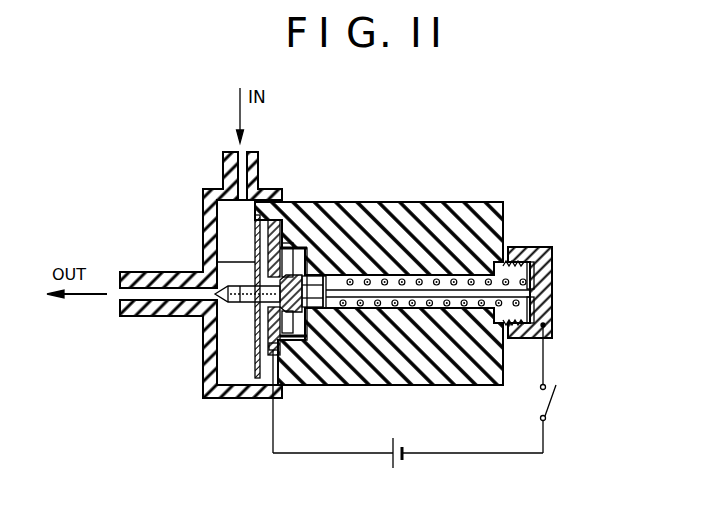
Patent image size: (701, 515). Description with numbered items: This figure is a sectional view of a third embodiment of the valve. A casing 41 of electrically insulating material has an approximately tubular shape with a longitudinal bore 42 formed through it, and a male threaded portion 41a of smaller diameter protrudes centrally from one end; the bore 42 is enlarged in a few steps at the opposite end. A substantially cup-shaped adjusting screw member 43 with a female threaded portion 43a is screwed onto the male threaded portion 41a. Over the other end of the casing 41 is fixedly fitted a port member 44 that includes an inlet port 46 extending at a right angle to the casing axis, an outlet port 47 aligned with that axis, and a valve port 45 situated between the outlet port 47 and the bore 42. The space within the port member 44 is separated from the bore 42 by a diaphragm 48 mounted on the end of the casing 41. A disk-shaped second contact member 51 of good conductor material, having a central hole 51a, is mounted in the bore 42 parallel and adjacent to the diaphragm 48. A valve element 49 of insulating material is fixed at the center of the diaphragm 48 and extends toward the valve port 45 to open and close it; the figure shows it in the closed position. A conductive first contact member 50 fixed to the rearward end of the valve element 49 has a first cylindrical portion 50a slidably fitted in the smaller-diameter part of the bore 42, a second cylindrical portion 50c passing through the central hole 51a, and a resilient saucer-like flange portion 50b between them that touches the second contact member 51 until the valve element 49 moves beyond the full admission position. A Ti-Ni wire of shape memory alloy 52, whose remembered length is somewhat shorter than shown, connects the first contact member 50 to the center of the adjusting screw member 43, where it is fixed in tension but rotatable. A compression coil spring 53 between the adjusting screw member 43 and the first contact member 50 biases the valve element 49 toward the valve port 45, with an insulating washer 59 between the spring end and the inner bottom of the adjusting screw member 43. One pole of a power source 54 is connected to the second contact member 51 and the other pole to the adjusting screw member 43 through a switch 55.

The casing 41 is at (399, 212).
The male threaded portion 41a is at (519, 340).
The longitudinal bore 42 is at (400, 322).
The adjusting screw member 43 is at (554, 287).
The female threaded portion 43a is at (536, 265).
The port member 44 is at (208, 190).
The valve port 45 is at (211, 318).
The inlet port 46 is at (242, 153).
The outlet port 47 is at (118, 294).
The diaphragm 48 is at (256, 240).
The valve element 49 is at (262, 343).
The first contact member 50 is at (318, 248).
The first cylindrical portion 50a is at (328, 346).
The flange portion 50b is at (284, 245).
The second cylindrical portion 50c is at (266, 352).
The second contact member 51 is at (264, 258).
The central hole 51a is at (216, 262).
The shape memory alloy 52 is at (428, 278).
The compression coil spring 53 is at (490, 264).
The power source 54 is at (398, 462).
The switch 55 is at (552, 406).
The washer 59 is at (545, 306).